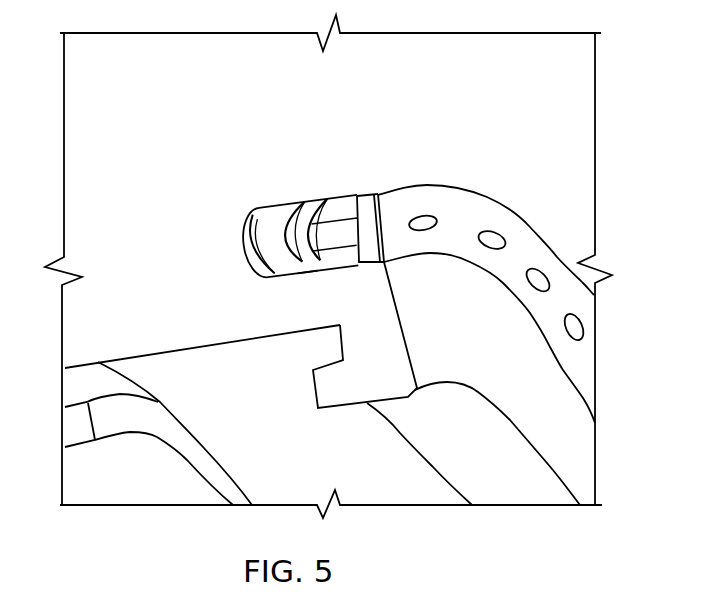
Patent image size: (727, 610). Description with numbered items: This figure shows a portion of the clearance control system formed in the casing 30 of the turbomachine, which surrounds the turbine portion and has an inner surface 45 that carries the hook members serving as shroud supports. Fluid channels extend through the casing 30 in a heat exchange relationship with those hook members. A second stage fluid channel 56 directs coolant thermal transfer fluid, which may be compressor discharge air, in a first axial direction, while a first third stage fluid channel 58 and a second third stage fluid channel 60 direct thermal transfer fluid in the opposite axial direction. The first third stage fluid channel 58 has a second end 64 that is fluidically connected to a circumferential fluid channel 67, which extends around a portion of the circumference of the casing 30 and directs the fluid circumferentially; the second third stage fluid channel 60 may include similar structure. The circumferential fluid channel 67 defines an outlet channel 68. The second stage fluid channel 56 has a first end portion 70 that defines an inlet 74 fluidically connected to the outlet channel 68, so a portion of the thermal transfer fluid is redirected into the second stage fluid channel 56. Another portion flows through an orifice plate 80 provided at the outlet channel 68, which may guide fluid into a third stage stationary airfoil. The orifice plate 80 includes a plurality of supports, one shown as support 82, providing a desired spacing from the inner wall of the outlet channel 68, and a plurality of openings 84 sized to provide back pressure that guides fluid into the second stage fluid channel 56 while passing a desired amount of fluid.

The casing 30 is at (92, 121).
The inner surface 45 is at (236, 343).
The second stage fluid channel 56 is at (272, 215).
The first third stage fluid channel 58 is at (224, 259).
The second third stage fluid channel 60 is at (317, 274).
The second end 64 is at (248, 238).
The circumferential fluid channel 67 is at (300, 273).
The outlet channel 68 is at (348, 213).
The first end portion 70 is at (301, 220).
The inlet 74 is at (312, 212).
The orifice plate 80 is at (474, 191).
The support 82 is at (348, 252).
The openings 84 is at (585, 356).